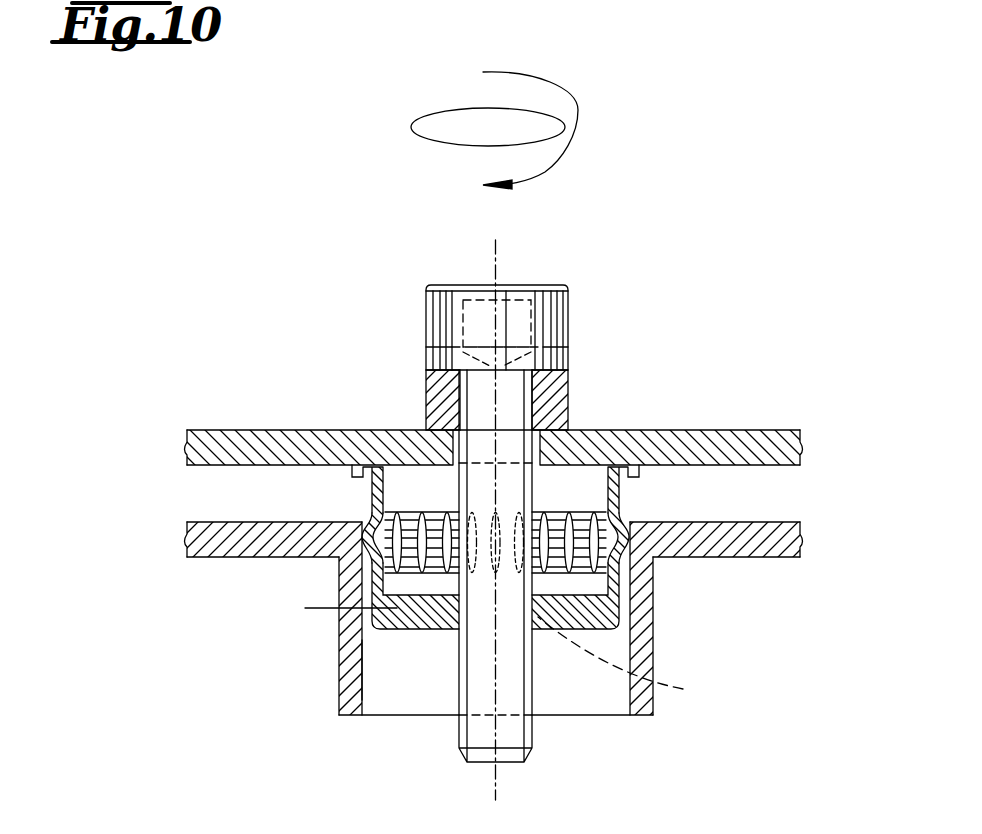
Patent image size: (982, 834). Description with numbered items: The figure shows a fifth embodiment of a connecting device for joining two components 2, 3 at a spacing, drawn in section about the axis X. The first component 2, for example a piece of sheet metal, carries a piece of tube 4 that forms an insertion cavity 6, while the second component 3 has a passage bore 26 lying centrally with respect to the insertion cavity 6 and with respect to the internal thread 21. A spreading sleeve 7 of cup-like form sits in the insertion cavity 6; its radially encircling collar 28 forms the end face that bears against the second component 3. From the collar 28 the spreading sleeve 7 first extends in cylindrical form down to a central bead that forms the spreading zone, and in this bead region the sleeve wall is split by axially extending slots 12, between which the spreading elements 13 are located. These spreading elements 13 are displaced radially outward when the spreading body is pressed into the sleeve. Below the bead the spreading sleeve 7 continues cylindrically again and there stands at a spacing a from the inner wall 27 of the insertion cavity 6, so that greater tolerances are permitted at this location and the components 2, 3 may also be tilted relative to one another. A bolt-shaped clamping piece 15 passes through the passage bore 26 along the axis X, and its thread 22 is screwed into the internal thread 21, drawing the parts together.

The first component 2 is at (790, 518).
The second component 3 is at (757, 428).
The piece of tube 4 is at (642, 638).
The insertion cavity 6 is at (583, 680).
The spreading sleeve 7 is at (336, 498).
The slots 12 is at (554, 541).
The spreading elements 13 is at (612, 530).
The clamping piece 15 is at (551, 285).
The internal thread 21 is at (628, 660).
The thread 22 is at (528, 396).
The passage bore 26 is at (458, 453).
The inner wall 27 is at (365, 662).
The radially encircling collar 28 is at (364, 467).
The spacing a is at (351, 597).
The axis X is at (496, 521).